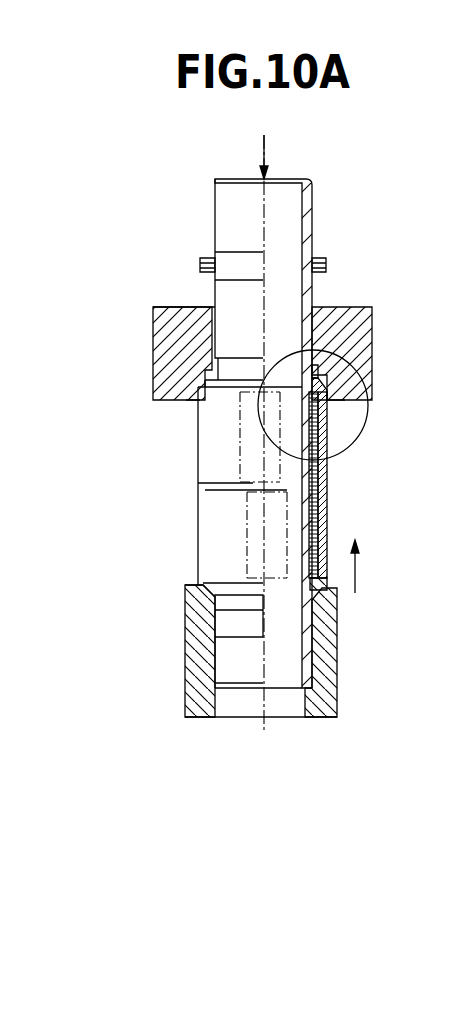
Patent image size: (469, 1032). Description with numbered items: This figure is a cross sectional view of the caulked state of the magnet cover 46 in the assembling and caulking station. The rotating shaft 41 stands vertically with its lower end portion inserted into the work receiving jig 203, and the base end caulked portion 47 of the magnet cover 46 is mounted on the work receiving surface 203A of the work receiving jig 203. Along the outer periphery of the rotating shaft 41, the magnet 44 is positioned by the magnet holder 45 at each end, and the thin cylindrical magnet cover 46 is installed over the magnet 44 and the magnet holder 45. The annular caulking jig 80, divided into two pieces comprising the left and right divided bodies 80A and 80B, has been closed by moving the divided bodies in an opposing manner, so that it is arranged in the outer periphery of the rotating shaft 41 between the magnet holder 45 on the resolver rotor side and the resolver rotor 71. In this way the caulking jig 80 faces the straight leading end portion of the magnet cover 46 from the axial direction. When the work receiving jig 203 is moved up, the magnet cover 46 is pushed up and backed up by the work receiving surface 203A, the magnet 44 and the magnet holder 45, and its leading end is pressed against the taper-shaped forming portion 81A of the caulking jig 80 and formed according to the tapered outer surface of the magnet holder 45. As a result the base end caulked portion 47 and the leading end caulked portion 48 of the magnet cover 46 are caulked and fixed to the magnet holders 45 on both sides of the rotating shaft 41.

The rotating shaft 41 is at (312, 207).
The resolver rotor 71 is at (326, 268).
The caulking jig 80 is at (177, 306).
The left divided body 80A is at (155, 325).
The right divided body 80B is at (365, 326).
The leading end caulked portion 48 is at (320, 370).
The magnet holder 45 is at (327, 393).
The taper-shaped forming portion 81A is at (188, 405).
The magnet 44 is at (325, 466).
The magnet cover 46 is at (327, 519).
The base end caulked portion 47 is at (335, 594).
The work receiving jig 203 is at (330, 676).
The work receiving surface 203A is at (205, 590).